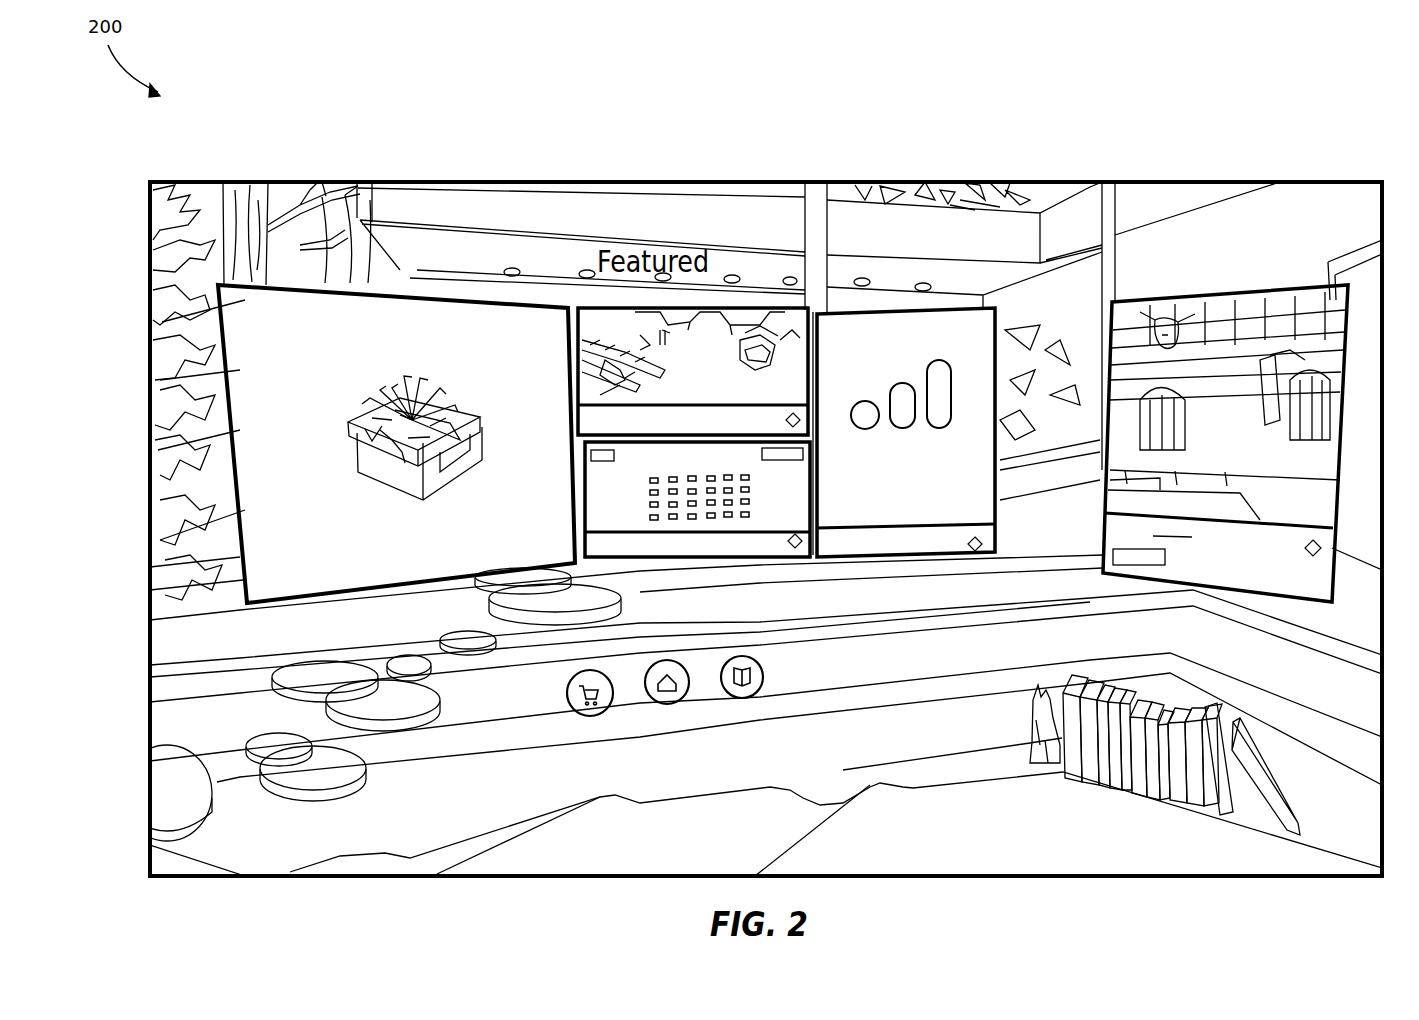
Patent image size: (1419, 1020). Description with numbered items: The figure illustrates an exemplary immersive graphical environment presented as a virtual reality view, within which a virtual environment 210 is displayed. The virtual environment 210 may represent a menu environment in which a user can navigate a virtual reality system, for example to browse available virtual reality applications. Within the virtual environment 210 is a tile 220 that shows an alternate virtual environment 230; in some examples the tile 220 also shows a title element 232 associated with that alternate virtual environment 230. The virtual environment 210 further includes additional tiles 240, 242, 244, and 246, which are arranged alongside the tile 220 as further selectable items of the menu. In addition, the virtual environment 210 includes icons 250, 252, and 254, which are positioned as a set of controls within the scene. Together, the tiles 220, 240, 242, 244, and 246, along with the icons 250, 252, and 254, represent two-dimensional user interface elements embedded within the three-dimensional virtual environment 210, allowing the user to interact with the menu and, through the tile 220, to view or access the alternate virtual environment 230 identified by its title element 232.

The virtual environment 210 is at (815, 207).
The tile 220 is at (1240, 288).
The alternate virtual environment 230 is at (1187, 342).
The title element 232 is at (1237, 368).
The tile 240 is at (463, 303).
The tile 242 is at (715, 437).
The tile 244 is at (733, 312).
The tile 246 is at (818, 313).
The icon 250 is at (585, 715).
The icon 252 is at (665, 703).
The icon 254 is at (740, 698).